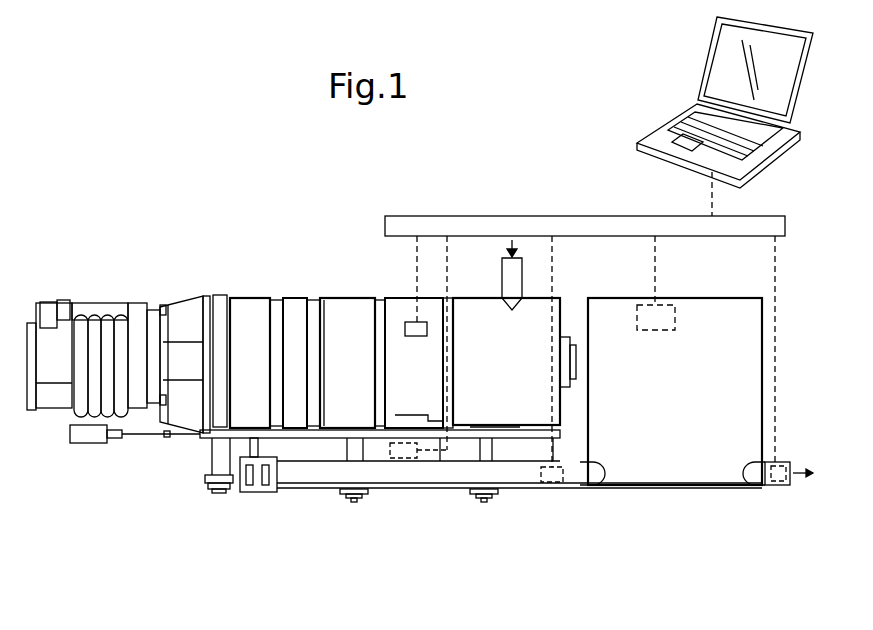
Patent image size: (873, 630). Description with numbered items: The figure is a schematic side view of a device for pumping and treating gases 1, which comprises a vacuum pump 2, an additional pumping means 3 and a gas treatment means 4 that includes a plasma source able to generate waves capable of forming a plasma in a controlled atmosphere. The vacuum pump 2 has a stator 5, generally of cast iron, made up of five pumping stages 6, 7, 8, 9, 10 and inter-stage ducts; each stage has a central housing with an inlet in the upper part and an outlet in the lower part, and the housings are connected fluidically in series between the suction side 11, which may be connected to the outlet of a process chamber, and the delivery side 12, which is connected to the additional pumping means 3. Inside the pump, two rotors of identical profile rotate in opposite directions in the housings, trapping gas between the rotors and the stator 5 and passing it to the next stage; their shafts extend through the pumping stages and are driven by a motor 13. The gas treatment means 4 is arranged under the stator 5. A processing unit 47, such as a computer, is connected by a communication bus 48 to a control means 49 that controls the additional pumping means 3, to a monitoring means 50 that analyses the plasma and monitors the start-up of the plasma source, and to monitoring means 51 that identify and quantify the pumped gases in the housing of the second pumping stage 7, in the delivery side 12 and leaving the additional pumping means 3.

The device for pumping and treating gases 1 is at (203, 144).
The vacuum pump 2 is at (58, 430).
The additional pumping means 3 is at (708, 456).
The gas treatment means 4 is at (419, 411).
The stator 5 is at (513, 410).
The pumping stage 6 is at (483, 308).
The second pumping stage 7 is at (398, 288).
The pumping stage 8 is at (337, 302).
The pumping stage 9 is at (286, 301).
The pumping stage 10 is at (228, 302).
The suction side 11 is at (513, 271).
The delivery side 12 is at (262, 495).
The motor 13 is at (108, 301).
The processing unit 47 is at (700, 49).
The communication bus 48 is at (669, 226).
The control means 49 is at (643, 306).
The monitoring means 50 is at (403, 466).
The monitoring means 51 is at (790, 560).